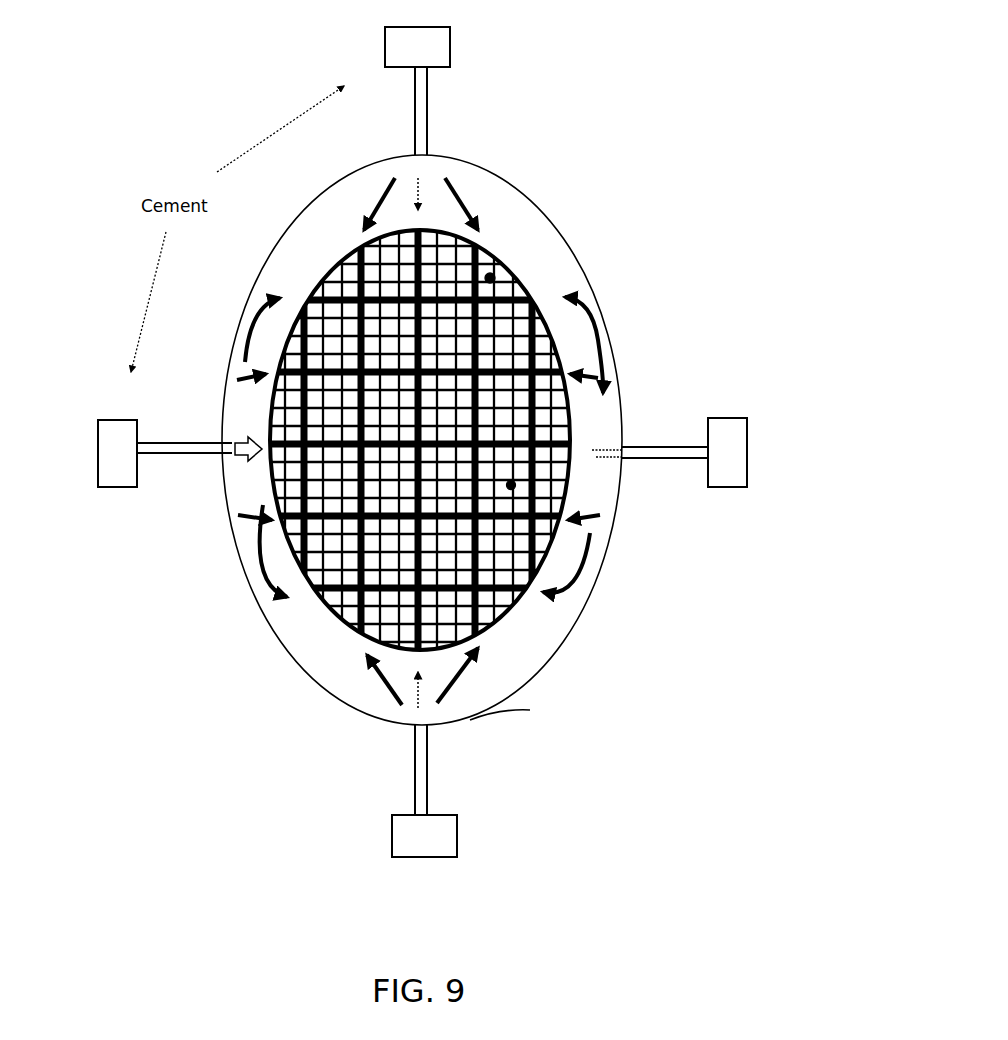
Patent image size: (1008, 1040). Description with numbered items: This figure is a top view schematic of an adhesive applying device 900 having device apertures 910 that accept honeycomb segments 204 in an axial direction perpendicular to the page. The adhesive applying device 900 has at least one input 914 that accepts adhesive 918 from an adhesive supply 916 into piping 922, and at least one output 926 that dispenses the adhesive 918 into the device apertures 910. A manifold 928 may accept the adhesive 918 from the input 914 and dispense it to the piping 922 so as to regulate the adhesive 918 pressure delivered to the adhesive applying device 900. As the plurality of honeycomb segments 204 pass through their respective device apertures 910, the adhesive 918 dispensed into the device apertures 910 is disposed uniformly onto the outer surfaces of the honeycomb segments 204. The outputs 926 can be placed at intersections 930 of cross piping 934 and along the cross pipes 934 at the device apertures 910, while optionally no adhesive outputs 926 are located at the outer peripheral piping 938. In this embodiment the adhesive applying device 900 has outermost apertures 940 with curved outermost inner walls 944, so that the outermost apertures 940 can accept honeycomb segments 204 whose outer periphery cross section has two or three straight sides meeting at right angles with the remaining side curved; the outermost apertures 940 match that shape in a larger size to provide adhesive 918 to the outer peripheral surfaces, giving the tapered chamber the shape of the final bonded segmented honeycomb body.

The adhesive applying device 900 is at (596, 69).
The honeycomb segments 204 is at (460, 562).
The device apertures 910 is at (511, 485).
The input 914 is at (657, 447).
The adhesive supply 916 is at (725, 427).
The adhesive 918 is at (596, 310).
The piping 922 is at (357, 303).
The output 926 is at (355, 336).
The manifold 928 is at (497, 680).
The intersections 930 is at (420, 512).
The cross piping 934 is at (356, 552).
The outer peripheral piping 938 is at (275, 460).
The outermost apertures 940 is at (492, 276).
The curved outermost inner walls 944 is at (517, 276).